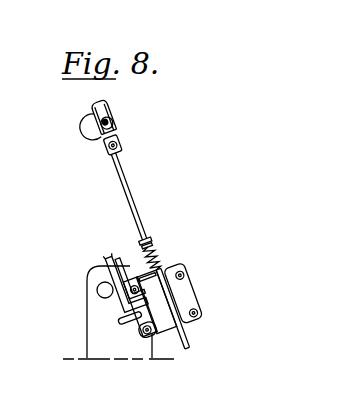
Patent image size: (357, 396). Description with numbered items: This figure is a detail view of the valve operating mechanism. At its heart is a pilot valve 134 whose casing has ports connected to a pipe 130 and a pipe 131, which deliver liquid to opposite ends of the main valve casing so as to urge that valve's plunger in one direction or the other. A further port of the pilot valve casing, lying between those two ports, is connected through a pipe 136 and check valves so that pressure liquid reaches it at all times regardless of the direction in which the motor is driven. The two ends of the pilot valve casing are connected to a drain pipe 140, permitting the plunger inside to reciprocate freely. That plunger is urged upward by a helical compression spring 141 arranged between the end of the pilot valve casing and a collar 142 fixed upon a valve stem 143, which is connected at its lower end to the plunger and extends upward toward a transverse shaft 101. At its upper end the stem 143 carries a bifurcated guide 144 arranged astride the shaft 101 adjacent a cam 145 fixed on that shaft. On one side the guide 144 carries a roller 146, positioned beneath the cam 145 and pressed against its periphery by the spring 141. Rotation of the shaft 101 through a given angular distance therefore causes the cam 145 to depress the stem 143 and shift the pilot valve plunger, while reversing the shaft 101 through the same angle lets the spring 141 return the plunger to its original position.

The transverse shaft 101 is at (108, 124).
The pipe 130 is at (117, 255).
The pipe 131 is at (108, 262).
The pilot valve 134 is at (189, 291).
The pipe 136 is at (114, 319).
The drain pipe 140 is at (188, 331).
The helical compression spring 141 is at (158, 252).
The collar 142 is at (153, 238).
The valve stem 143 is at (135, 196).
The bifurcated guide 144 is at (93, 110).
The cam 145 is at (117, 108).
The roller 146 is at (120, 146).